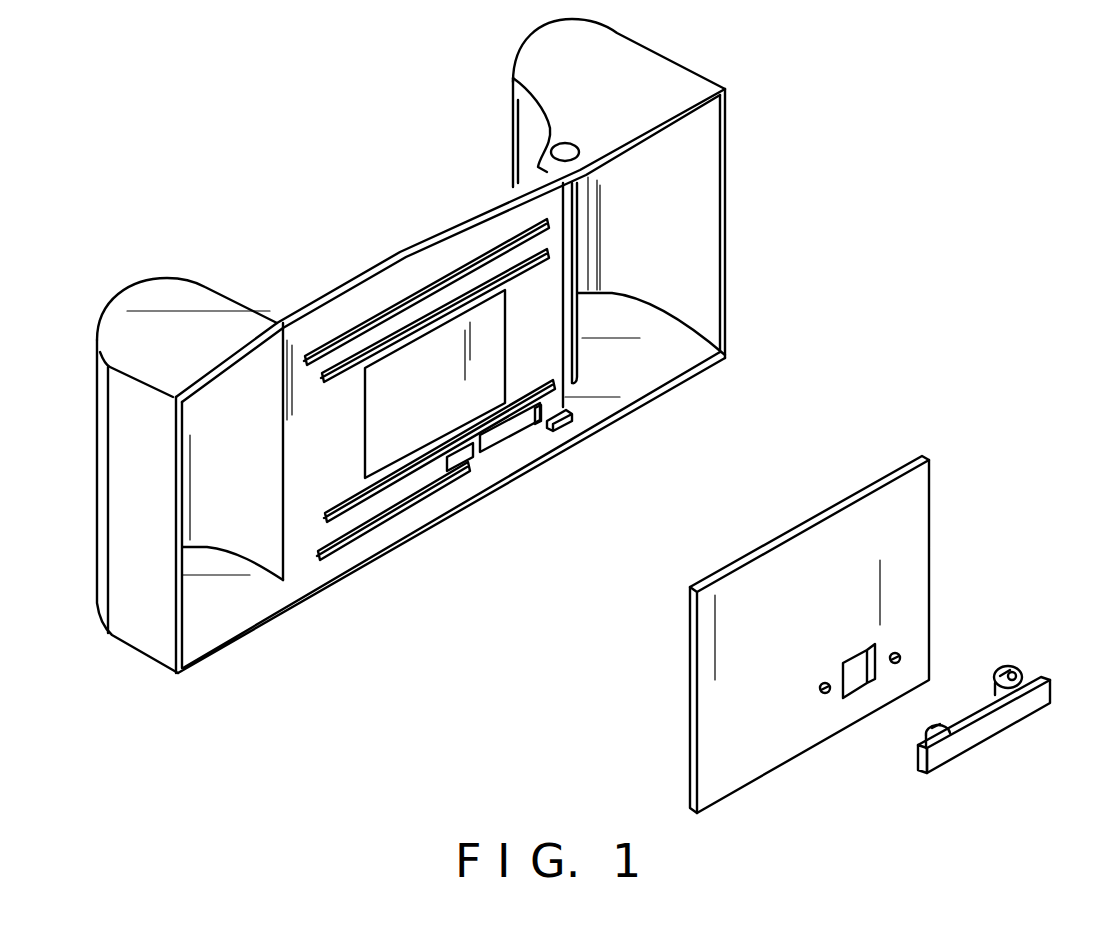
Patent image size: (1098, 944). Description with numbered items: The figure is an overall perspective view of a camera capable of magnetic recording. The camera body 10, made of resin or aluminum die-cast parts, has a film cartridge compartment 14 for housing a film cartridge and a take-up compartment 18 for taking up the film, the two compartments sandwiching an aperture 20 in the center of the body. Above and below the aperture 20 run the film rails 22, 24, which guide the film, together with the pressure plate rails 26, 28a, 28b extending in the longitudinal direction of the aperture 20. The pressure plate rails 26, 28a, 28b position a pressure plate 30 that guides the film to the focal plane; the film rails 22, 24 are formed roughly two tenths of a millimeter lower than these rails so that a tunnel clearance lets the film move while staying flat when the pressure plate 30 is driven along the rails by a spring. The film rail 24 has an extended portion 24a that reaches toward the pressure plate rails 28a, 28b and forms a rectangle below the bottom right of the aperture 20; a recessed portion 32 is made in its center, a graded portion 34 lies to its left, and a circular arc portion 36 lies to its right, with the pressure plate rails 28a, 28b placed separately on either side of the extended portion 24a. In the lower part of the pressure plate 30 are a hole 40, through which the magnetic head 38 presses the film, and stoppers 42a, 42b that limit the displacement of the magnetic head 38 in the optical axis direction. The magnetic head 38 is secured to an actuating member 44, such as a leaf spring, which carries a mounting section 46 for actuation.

The camera body 10 is at (307, 483).
The film cartridge compartment 14 is at (197, 523).
The take-up compartment 18 is at (690, 228).
The aperture 20 is at (421, 350).
The film rail 22 is at (493, 267).
The pressure plate rail 26 is at (333, 337).
The film rail 24 is at (403, 478).
The extended portion 24a is at (507, 452).
The pressure plate rail 28a is at (380, 523).
The pressure plate rail 28b is at (557, 430).
The recessed portion 32 is at (607, 418).
The graded portion 34 is at (515, 463).
The circular arc portion 36 is at (537, 432).
The pressure plate 30 is at (712, 743).
The hole 40 is at (853, 697).
The stopper 42a is at (825, 700).
The stopper 42b is at (902, 655).
The actuating member 44 is at (993, 733).
The mounting section 46 is at (1023, 663).
The magnetic head 38 is at (940, 743).